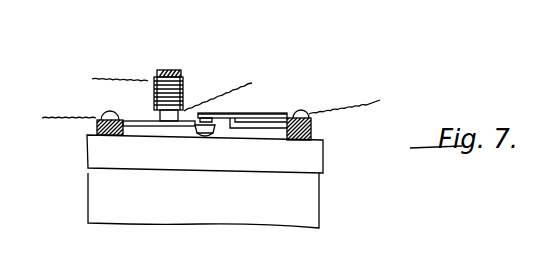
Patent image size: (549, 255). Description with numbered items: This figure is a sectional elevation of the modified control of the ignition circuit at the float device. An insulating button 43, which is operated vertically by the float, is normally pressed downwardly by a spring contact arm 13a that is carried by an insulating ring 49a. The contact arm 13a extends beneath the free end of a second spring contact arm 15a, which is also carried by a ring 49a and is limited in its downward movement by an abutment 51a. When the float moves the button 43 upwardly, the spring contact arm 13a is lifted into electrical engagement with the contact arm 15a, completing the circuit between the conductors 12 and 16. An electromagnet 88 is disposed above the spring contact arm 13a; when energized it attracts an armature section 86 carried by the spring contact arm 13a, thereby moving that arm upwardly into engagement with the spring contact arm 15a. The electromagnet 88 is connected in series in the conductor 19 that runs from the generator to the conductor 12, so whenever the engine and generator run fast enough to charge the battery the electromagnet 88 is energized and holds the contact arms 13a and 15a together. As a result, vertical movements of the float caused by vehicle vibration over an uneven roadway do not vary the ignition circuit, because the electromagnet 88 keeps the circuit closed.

The conductor 12 is at (75, 112).
The conductor 19 is at (178, 84).
The electromagnet 88 is at (184, 81).
The insulating ring 49a is at (96, 133).
The spring contact arm 13a is at (138, 126).
The armature section 86 is at (173, 124).
The insulating button 43 is at (212, 134).
The abutment 51a is at (270, 127).
The spring contact arm 15a is at (275, 113).
The conductor 16 is at (368, 104).